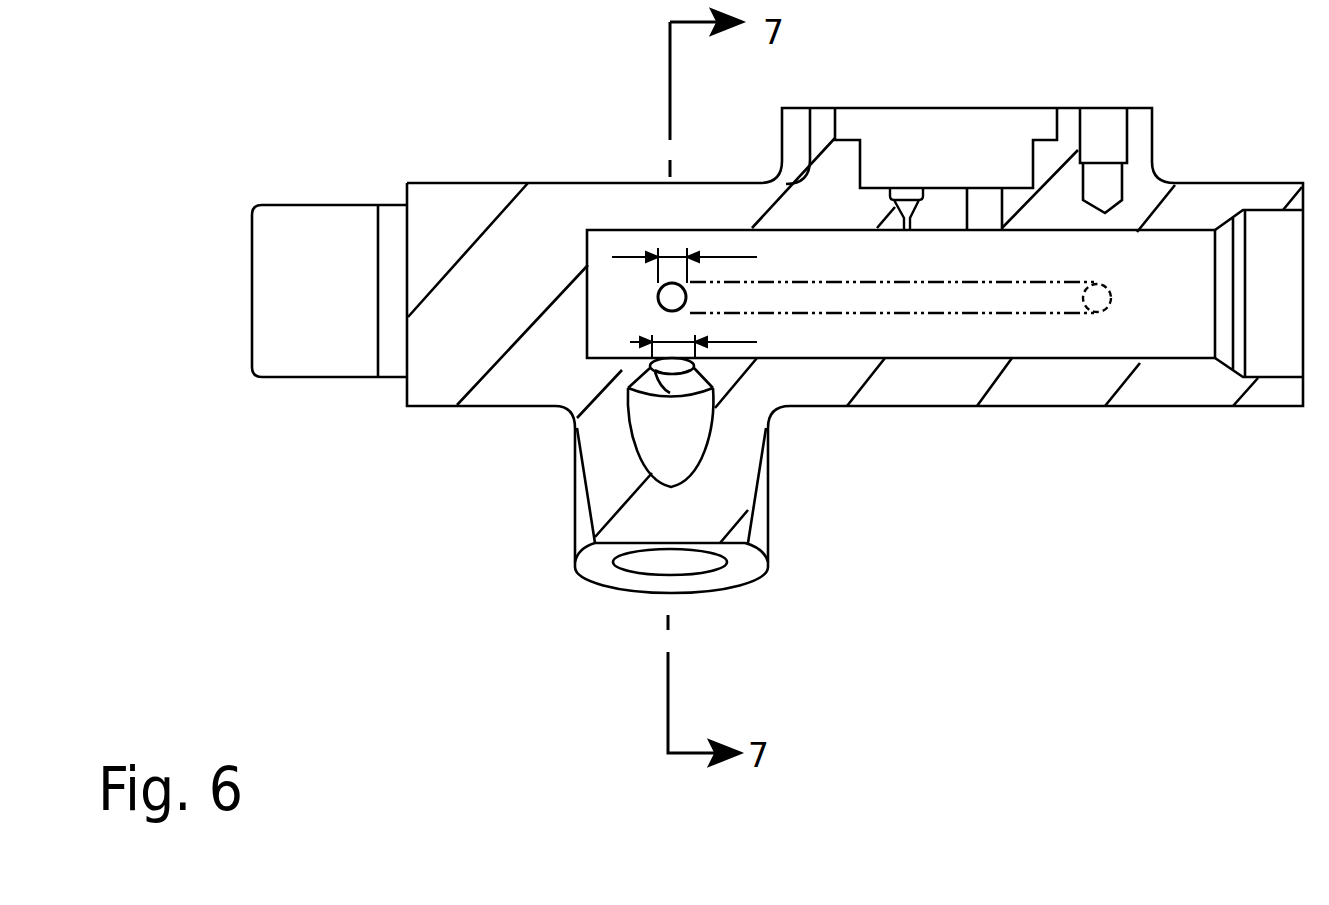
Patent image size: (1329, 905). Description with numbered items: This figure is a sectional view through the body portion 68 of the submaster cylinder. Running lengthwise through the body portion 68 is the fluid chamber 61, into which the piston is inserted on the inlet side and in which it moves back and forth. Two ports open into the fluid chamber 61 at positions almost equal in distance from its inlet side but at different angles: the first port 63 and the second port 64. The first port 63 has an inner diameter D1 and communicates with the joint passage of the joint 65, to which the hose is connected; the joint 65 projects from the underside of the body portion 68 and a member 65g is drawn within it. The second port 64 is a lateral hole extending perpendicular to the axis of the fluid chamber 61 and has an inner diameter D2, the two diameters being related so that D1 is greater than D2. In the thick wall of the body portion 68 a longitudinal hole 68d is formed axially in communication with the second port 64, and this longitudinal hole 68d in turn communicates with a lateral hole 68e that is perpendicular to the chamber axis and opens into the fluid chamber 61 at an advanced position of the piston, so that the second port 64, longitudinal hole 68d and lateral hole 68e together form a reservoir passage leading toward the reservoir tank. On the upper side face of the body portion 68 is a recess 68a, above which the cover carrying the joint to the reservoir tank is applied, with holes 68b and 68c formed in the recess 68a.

The fluid chamber 61 is at (1105, 340).
The first port 63 is at (647, 392).
The second port 64 is at (658, 292).
The joint 65 is at (605, 490).
The bullet-shaped member 65g is at (680, 452).
The body portion 68 is at (487, 200).
The recess 68a is at (975, 153).
The hole 68b is at (910, 232).
The hole 68c is at (978, 222).
The longitudinal hole 68d is at (898, 313).
The lateral hole 68e is at (1103, 291).
The inner diameter of the first port D1 is at (717, 344).
The inner diameter of the second port D2 is at (708, 262).